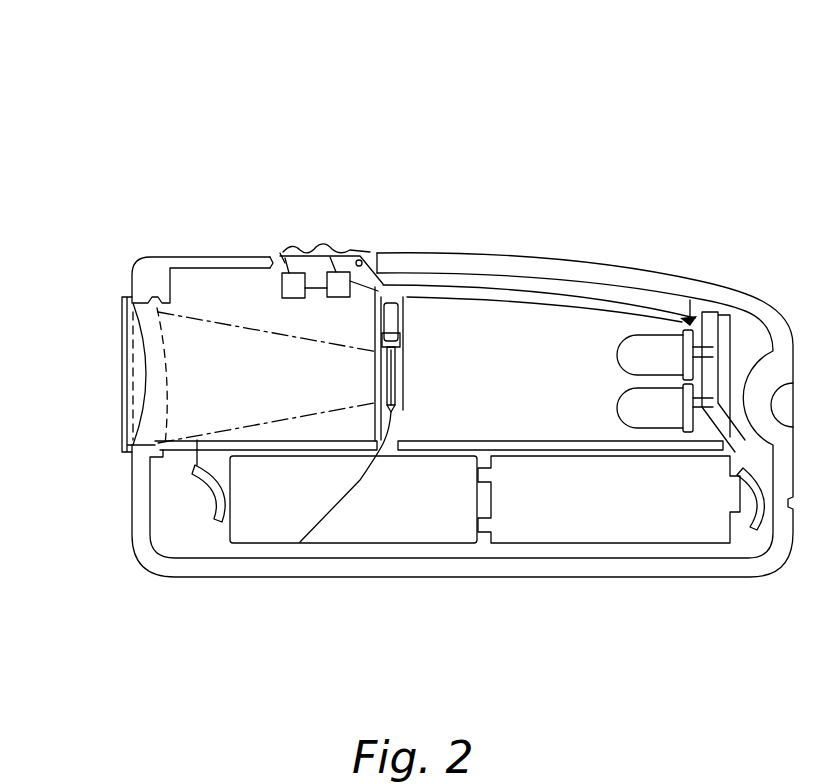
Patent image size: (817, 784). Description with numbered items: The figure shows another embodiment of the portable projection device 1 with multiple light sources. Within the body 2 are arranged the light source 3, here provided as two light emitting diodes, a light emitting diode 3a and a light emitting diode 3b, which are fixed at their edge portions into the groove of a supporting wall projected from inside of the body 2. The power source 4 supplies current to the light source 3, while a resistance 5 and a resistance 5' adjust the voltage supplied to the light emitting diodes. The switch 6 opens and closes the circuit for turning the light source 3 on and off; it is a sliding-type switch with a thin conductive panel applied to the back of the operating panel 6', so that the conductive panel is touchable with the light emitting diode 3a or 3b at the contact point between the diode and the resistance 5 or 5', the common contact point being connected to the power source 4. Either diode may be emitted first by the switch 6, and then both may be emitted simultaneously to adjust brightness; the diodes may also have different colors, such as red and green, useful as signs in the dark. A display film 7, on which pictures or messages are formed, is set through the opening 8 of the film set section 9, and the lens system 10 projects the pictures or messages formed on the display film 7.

The portable projection device 1 is at (480, 98).
The body 2 is at (152, 278).
The light source 3 is at (566, 368).
The light emitting diode 3a is at (624, 348).
The light emitting diode 3b is at (633, 410).
The power source 4 is at (552, 518).
The resistance 5 is at (272, 242).
The resistance 5' is at (339, 298).
The switch 6 is at (326, 211).
The operating panel 6' is at (339, 244).
The display film 7 is at (300, 542).
The opening 8 is at (410, 474).
The film set section 9 is at (427, 387).
The lens system 10 is at (121, 455).